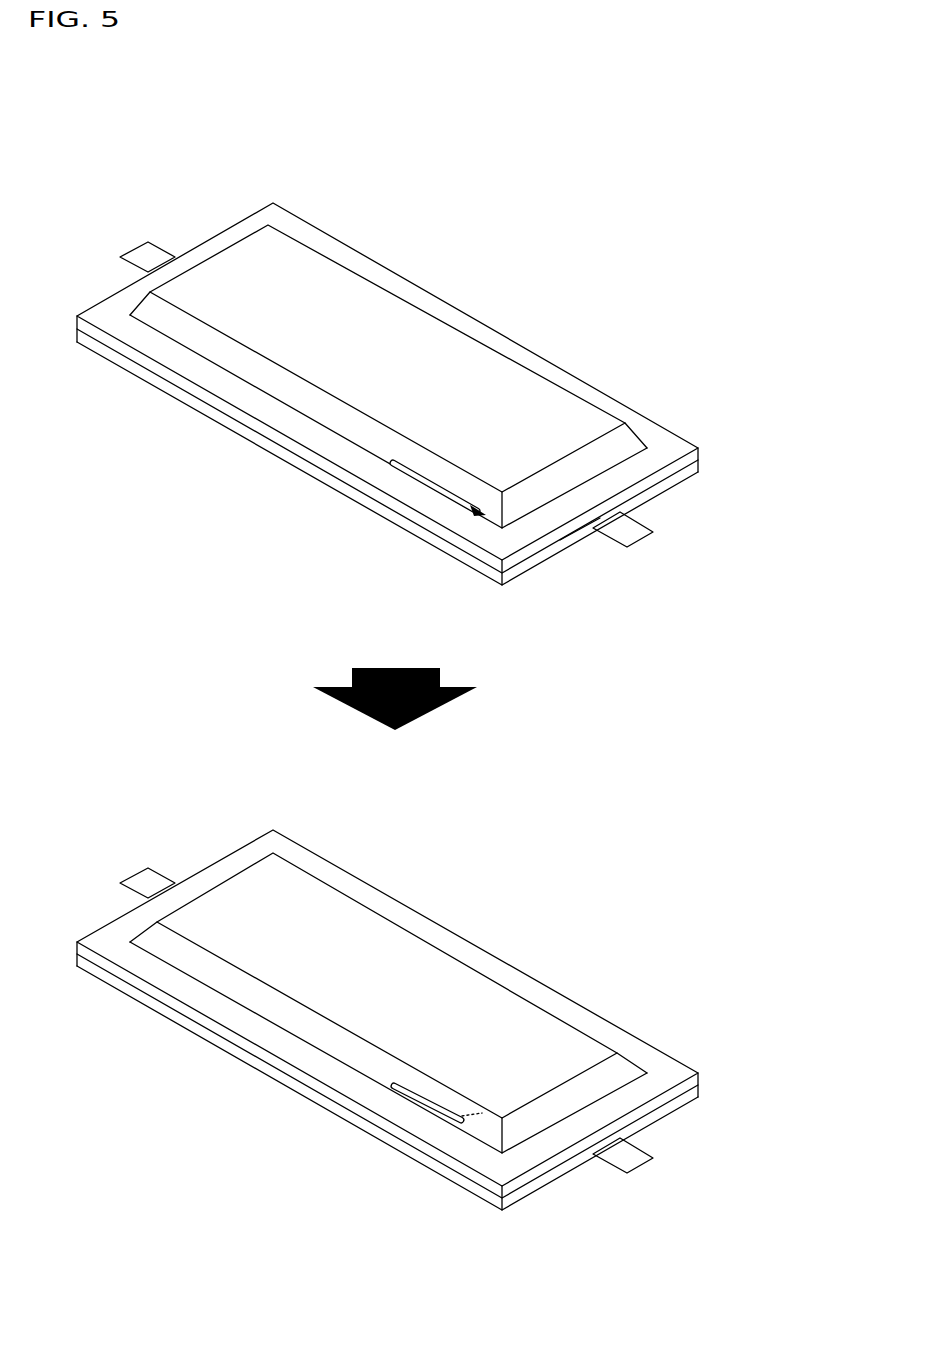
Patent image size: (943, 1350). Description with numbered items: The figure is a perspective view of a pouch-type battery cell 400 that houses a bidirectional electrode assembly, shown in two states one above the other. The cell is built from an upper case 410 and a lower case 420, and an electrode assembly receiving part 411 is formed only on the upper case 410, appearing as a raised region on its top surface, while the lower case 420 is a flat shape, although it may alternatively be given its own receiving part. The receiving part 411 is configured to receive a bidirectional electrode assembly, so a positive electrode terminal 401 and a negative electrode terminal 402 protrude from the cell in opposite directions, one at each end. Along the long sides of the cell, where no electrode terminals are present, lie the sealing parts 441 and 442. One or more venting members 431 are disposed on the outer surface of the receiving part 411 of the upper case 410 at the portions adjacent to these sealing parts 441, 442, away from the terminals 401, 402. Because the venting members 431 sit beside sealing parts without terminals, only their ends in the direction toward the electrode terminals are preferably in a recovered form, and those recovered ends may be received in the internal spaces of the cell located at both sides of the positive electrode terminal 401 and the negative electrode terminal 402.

The pouch-type battery cell 400 is at (158, 122).
The positive electrode terminal 401 is at (148, 260).
The negative electrode terminal 402 is at (627, 531).
The upper case 410 is at (355, 249).
The electrode assembly receiving part 411 is at (445, 345).
The lower case 420 is at (228, 426).
The venting member 431 is at (410, 480).
The sealing part 441 is at (663, 1072).
The sealing part 442 is at (470, 526).